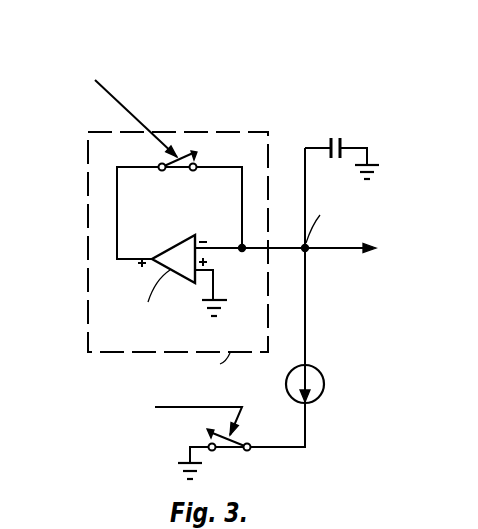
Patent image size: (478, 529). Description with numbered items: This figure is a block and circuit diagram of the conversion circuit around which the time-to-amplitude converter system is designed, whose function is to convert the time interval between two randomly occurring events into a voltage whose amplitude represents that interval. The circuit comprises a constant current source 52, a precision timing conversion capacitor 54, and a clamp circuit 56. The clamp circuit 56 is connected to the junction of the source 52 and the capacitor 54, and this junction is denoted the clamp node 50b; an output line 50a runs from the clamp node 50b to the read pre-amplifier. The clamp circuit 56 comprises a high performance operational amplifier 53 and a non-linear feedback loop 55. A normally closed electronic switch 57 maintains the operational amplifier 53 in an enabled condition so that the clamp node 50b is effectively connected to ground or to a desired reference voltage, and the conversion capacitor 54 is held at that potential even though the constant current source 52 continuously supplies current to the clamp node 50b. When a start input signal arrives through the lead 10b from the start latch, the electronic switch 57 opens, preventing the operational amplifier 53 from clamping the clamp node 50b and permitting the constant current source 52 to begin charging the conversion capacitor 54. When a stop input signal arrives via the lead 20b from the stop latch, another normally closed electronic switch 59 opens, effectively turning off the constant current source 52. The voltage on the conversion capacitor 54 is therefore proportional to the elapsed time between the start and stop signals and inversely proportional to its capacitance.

The lead 10b is at (110, 95).
The electronic switch 57 is at (175, 169).
The non-linear feedback loop 55 is at (214, 169).
The operational amplifier 53 is at (188, 265).
The clamp circuit 56 is at (89, 276).
The conversion capacitor 54 is at (341, 140).
The clamp node 50b is at (306, 251).
The output line to read pre-amplifier 50a is at (357, 252).
The constant current source 52 is at (286, 383).
The lead 20b is at (185, 407).
The electronic switch 59 is at (225, 450).